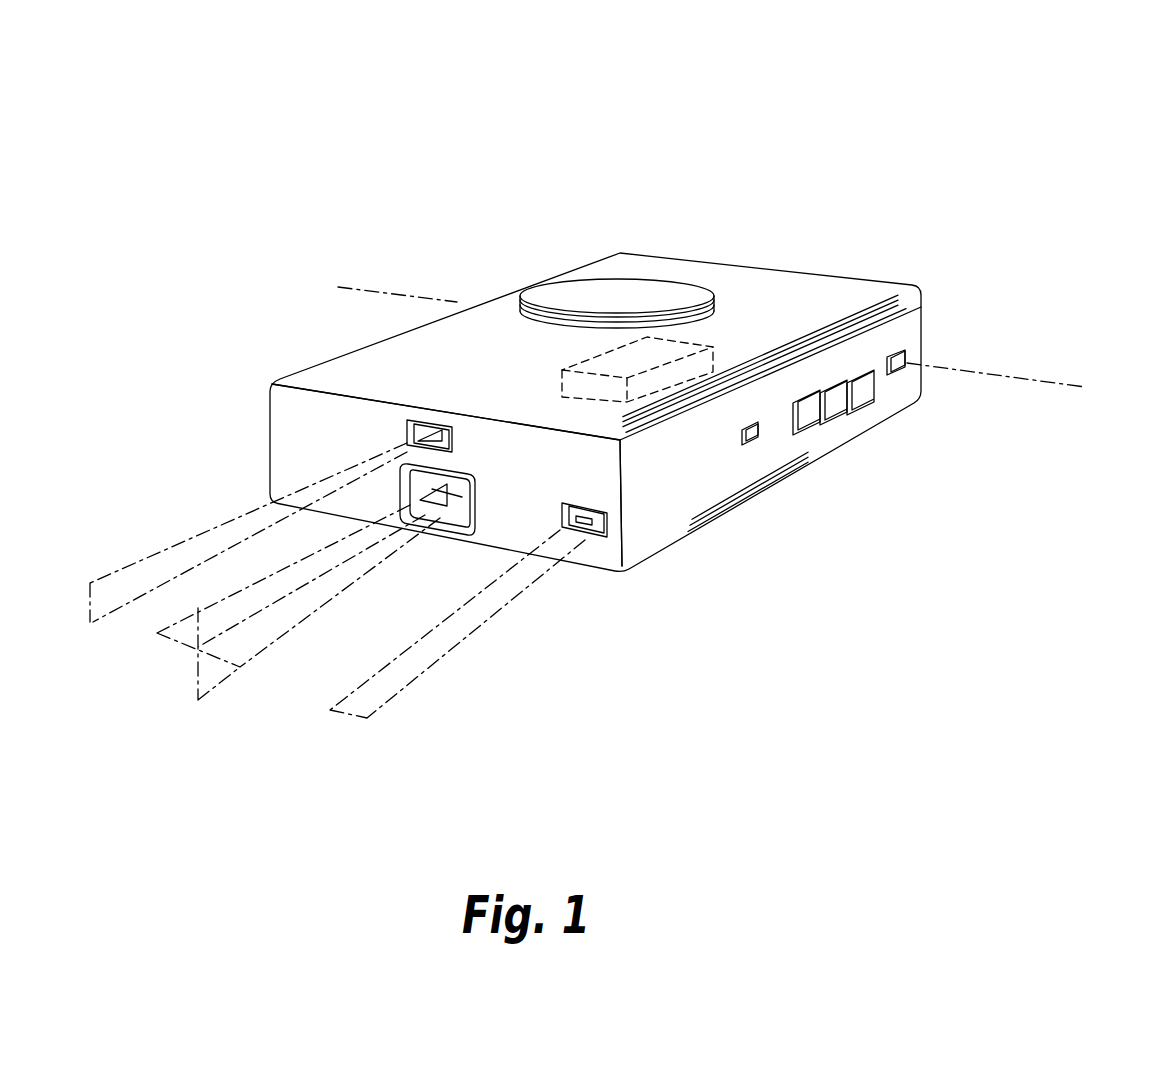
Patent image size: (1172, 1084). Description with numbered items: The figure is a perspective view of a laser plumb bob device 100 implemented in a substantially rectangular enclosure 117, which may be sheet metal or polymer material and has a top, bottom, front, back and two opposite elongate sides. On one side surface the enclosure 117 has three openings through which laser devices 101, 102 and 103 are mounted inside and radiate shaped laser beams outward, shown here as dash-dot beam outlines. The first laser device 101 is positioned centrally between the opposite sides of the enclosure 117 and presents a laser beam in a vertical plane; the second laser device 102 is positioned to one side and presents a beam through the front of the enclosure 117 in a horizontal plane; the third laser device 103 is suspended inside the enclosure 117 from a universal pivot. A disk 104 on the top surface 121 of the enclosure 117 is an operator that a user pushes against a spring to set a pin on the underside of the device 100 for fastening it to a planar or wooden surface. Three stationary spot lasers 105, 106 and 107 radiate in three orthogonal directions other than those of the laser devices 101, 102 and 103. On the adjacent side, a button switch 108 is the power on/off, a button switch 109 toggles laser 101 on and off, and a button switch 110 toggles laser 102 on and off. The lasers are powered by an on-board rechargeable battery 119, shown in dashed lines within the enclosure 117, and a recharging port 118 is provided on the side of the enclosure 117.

The laser plumb bob device 100 is at (706, 143).
The first laser device 101 is at (440, 420).
The second laser device 102 is at (590, 505).
The third laser device 103 is at (461, 479).
The disk 104 is at (610, 290).
The stationary spot laser 105 is at (905, 368).
The stationary spot laser 106 is at (437, 290).
The stationary spot laser 107 is at (803, 273).
The button switch 108 is at (858, 381).
The button switch 109 is at (845, 398).
The button switch 110 is at (822, 402).
The enclosure 117 is at (822, 297).
The recharging port 118 is at (760, 431).
The rechargeable battery 119 is at (696, 352).
The top surface 121 is at (438, 385).